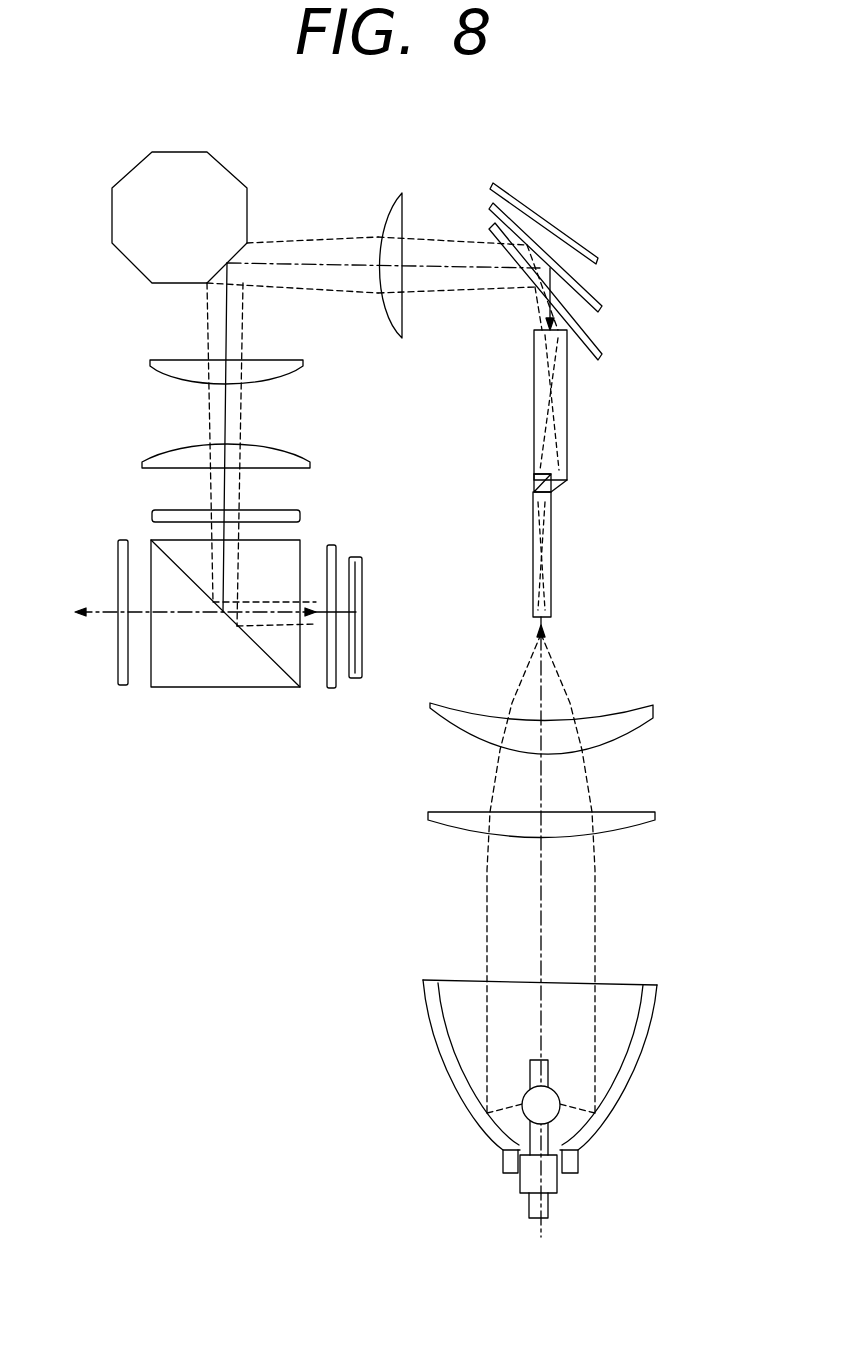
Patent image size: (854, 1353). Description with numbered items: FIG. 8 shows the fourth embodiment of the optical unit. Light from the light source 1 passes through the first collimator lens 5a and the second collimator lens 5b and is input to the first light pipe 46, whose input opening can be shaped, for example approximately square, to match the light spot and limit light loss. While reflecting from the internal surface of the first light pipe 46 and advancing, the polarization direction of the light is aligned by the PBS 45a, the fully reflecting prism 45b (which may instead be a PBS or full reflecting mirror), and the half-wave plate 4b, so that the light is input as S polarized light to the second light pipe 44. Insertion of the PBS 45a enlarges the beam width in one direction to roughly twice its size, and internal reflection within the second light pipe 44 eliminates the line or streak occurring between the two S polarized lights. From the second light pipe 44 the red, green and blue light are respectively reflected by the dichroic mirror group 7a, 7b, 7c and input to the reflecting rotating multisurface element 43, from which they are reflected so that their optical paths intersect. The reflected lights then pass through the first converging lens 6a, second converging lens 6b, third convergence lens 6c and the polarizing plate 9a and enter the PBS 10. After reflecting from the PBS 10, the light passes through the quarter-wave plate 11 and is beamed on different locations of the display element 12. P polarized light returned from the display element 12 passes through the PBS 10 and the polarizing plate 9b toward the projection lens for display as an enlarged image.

The light source 1 is at (655, 1038).
The λ/2 wavelength plate 4b is at (534, 465).
The first collimator lens 5a is at (657, 818).
The second collimator lens 5b is at (655, 712).
The first converging lens 6a is at (388, 205).
The second converging lens 6b is at (150, 360).
The third convergence lens 6c is at (150, 458).
The dichroic mirror 7a is at (600, 345).
The dichroic mirror 7b is at (602, 300).
The dichroic mirror 7c is at (593, 248).
The polarizing plate 9a is at (150, 512).
The polarizing plate 9b is at (122, 687).
The PBS 10 is at (210, 687).
The λ/4 wavelength plate 11 is at (328, 688).
The display element 12 is at (352, 680).
The reflecting rotating multisurface element 43 is at (128, 172).
The second light pipe 44 is at (567, 443).
The PBS 45a is at (534, 483).
The fully reflecting prism 45b is at (558, 488).
The first light pipe 46 is at (551, 573).